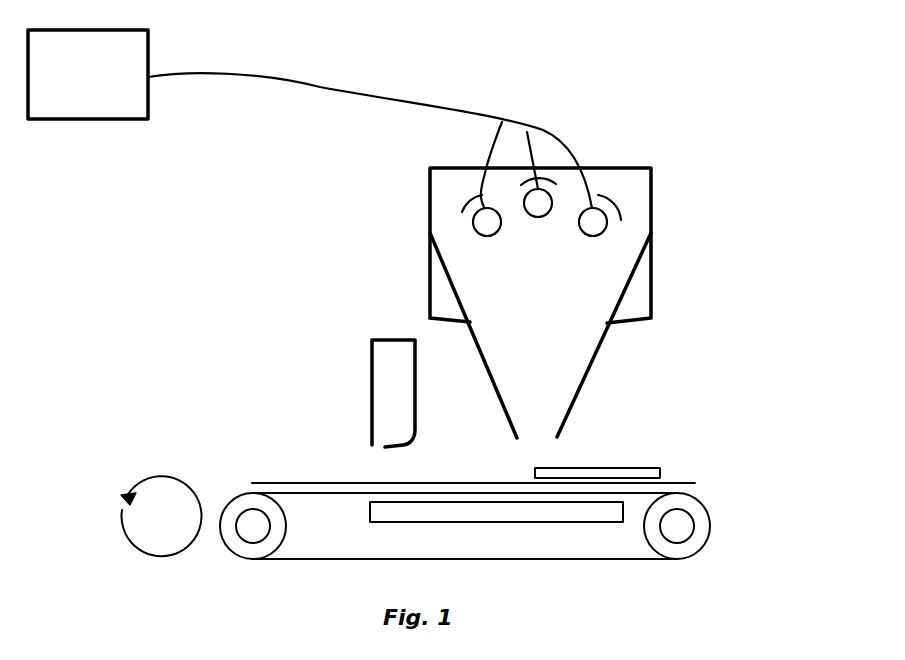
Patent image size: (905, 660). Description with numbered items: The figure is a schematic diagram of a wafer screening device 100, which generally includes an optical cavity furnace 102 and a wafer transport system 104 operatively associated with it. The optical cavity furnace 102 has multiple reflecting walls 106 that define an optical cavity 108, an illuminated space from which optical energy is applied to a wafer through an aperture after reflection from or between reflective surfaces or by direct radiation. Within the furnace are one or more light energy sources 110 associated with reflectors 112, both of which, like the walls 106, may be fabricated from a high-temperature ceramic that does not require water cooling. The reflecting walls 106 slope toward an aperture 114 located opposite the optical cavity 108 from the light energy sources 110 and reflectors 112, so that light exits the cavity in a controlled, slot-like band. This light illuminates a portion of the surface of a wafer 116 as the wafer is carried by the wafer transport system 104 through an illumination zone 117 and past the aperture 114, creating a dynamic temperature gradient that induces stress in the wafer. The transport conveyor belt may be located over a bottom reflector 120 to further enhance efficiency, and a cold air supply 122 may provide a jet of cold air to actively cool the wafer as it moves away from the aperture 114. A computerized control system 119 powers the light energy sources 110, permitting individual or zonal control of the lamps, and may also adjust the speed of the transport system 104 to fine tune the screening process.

The wafer screening device 100 is at (717, 279).
The optical cavity furnace 102 is at (403, 199).
The wafer transport system 104 is at (729, 526).
The reflecting walls 106 is at (594, 356).
The optical cavity 108 is at (495, 335).
The light energy sources 110 is at (542, 205).
The reflectors 112 is at (612, 200).
The aperture 114 is at (538, 436).
The wafer 116 is at (632, 472).
The illumination zone 117 is at (524, 456).
The computerized control system 119 is at (310, 119).
The bottom reflector 120 is at (529, 521).
The cold air supply 122 is at (388, 392).